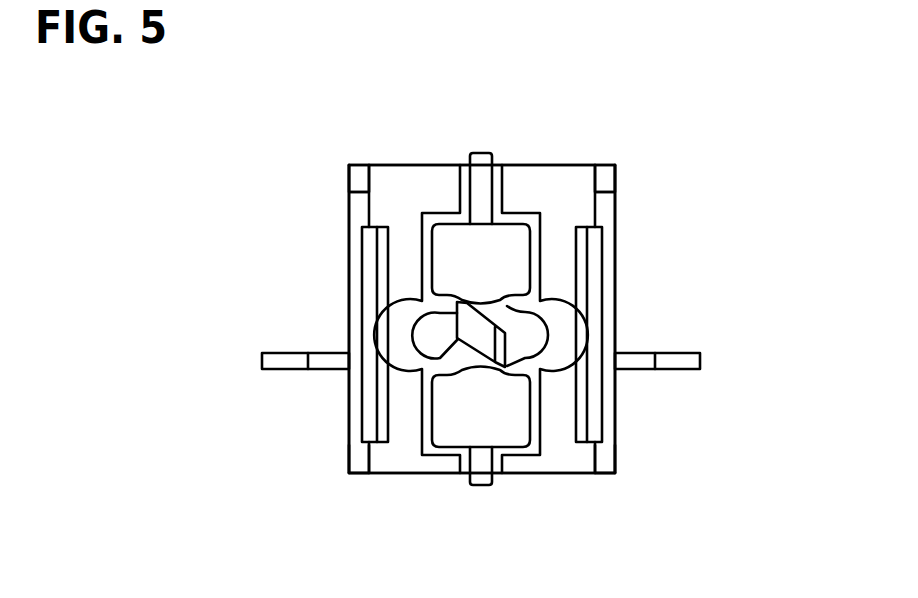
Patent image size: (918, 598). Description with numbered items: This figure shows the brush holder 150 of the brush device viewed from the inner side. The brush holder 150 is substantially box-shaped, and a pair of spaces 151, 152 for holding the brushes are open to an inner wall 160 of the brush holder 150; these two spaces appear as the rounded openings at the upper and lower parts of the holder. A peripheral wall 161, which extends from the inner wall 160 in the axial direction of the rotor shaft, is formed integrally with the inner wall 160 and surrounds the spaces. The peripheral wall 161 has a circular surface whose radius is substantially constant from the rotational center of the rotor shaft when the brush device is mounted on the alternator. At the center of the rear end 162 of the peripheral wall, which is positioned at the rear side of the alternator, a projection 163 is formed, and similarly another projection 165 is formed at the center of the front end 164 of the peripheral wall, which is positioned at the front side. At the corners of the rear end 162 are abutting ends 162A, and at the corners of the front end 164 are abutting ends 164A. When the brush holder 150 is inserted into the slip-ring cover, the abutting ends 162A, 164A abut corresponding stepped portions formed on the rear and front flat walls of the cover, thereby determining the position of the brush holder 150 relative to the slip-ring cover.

The brush holder 150 is at (637, 165).
The space for holding brush 151 is at (502, 415).
The space for holding brush 152 is at (500, 257).
The inner wall 160 is at (402, 212).
The peripheral wall 161 is at (612, 252).
The rear end of the peripheral wall 162 is at (542, 163).
The abutting end 162A is at (360, 165).
The projection 163 is at (481, 153).
The front end of the peripheral wall 164 is at (553, 475).
The abutting end 164A is at (360, 464).
The projection 165 is at (482, 485).